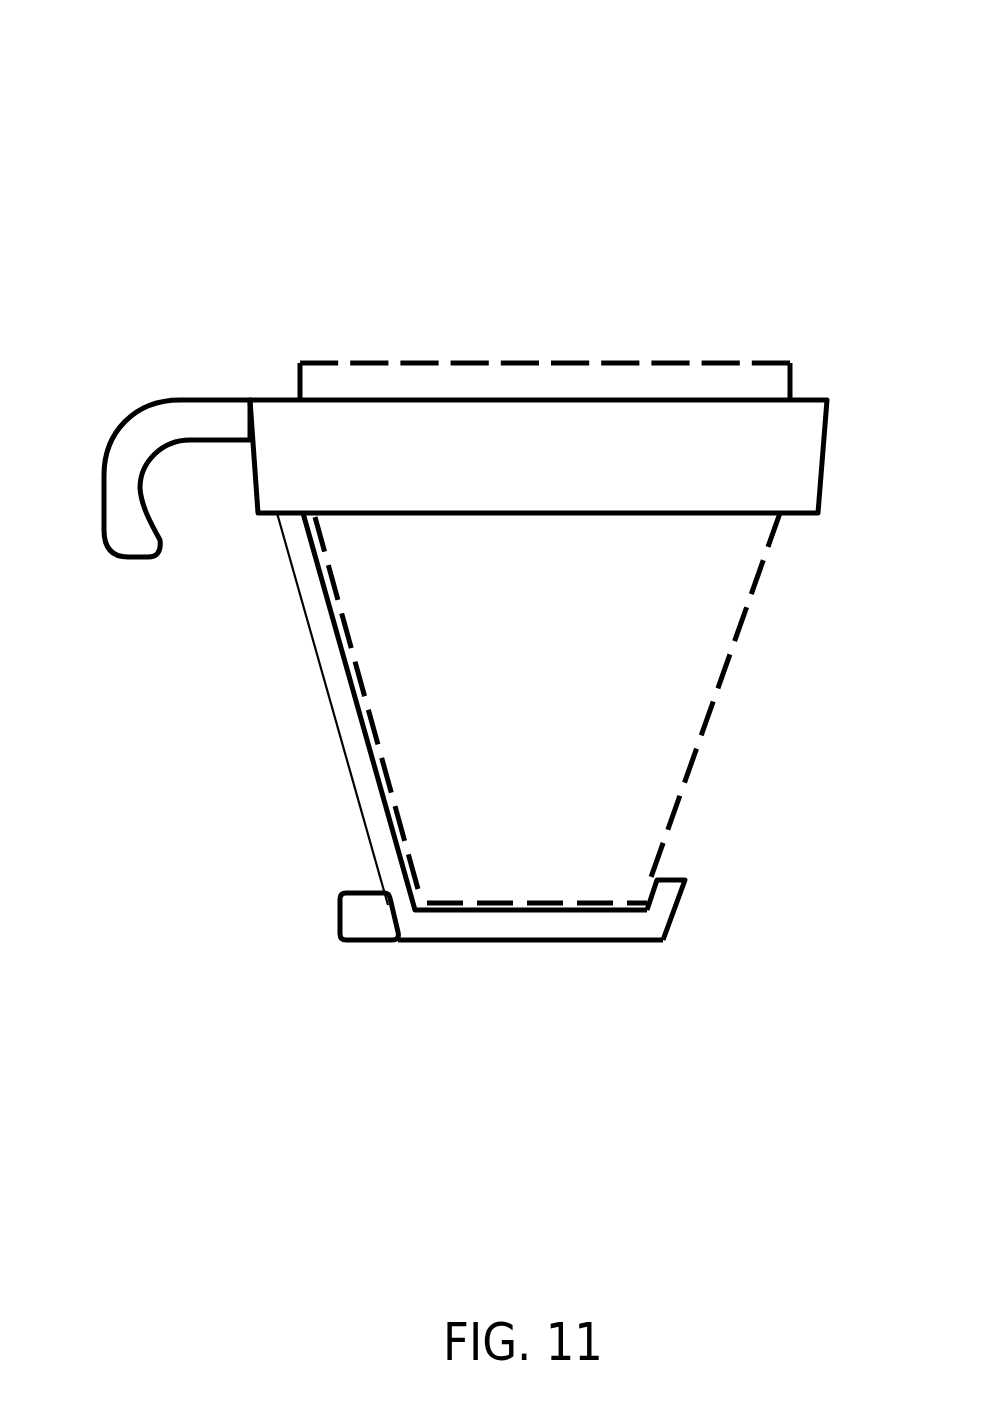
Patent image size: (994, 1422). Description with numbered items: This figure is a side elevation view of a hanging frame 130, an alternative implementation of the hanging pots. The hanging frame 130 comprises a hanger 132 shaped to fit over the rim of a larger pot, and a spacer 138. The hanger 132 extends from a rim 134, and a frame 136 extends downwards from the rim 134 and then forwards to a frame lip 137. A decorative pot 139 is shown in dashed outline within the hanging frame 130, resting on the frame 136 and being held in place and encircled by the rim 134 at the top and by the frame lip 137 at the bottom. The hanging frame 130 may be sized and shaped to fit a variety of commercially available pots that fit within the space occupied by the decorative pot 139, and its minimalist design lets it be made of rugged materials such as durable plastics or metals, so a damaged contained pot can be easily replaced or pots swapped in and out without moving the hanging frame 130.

The hanging frame 130 is at (752, 126).
The hanger 132 is at (183, 402).
The rim 134 is at (502, 433).
The frame 136 is at (527, 945).
The frame lip 137 is at (681, 897).
The spacer 138 is at (368, 940).
The decorative pot 139 is at (722, 702).